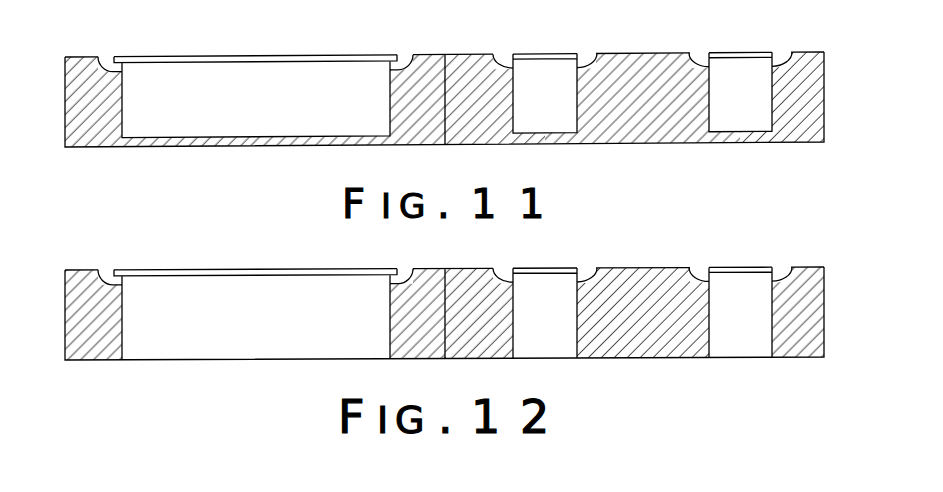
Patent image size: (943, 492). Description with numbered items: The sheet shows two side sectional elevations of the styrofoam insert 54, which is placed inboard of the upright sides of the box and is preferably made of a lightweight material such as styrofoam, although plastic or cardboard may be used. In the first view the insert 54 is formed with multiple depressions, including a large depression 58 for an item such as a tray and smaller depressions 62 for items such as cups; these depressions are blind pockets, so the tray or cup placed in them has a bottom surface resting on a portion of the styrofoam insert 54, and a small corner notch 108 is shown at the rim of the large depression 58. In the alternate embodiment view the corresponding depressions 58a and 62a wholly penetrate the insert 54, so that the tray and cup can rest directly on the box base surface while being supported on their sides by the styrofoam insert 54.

In FIG. 11, the styrofoam insert 54 is at (78, 57).
In FIG. 11, the corner notch 108 is at (107, 62).
In FIG. 11, the depression 58 is at (273, 77).
In FIG. 11, the depression 62 is at (550, 70).
In FIG. 12, the depression 58a is at (263, 288).
In FIG. 12, the depression 62a is at (546, 283).